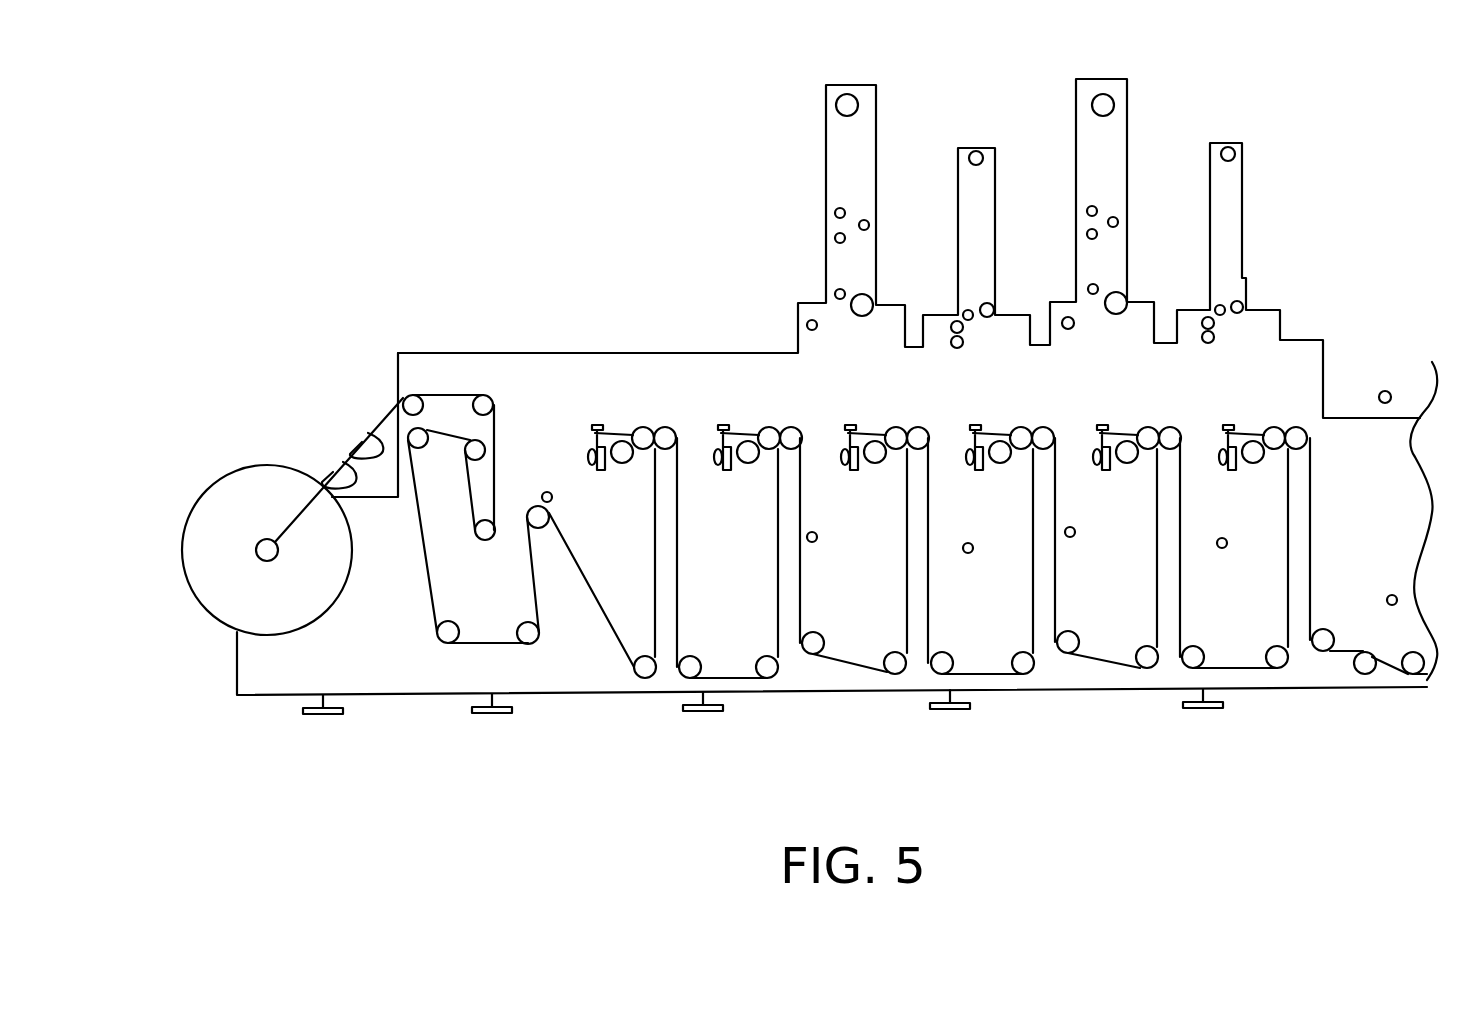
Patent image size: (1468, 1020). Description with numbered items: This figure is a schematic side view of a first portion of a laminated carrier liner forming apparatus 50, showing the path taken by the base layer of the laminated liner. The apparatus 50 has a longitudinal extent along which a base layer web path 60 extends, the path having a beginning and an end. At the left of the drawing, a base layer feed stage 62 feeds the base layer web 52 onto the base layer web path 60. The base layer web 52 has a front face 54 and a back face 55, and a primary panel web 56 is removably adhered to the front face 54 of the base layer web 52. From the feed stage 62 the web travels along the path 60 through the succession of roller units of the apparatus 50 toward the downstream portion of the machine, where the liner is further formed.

The laminated carrier liner forming apparatus 50 is at (652, 172).
The base layer feed stage 62 is at (473, 200).
The primary panel web 56 is at (401, 401).
The front face 54 is at (396, 404).
The base layer web 52 is at (350, 452).
The back face 55 is at (320, 480).
The base layer web path 60 is at (428, 582).